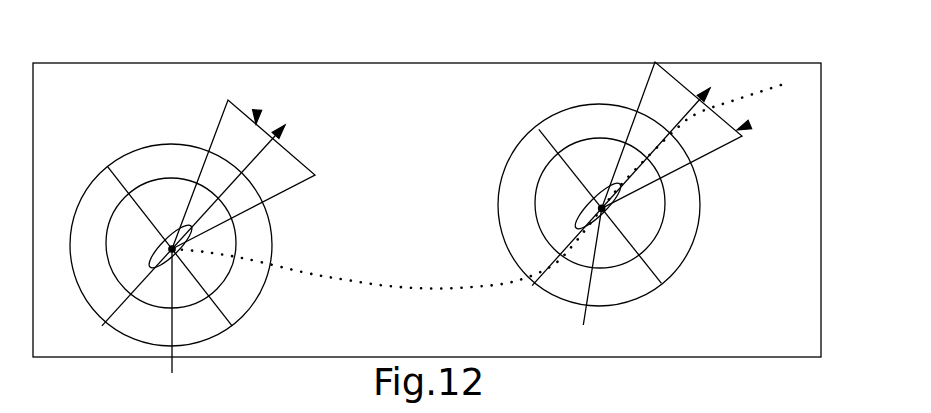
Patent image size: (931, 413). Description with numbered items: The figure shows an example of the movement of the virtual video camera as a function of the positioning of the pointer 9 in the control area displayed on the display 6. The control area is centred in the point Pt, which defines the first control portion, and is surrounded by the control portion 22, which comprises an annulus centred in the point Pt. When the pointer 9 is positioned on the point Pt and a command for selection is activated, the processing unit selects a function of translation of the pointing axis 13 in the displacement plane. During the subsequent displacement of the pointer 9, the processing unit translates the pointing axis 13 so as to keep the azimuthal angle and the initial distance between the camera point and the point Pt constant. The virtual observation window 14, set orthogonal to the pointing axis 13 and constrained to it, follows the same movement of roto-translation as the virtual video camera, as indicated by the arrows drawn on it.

The display 6 is at (393, 109).
The pointer 9 is at (589, 280).
The pointing axis 13 is at (222, 190).
The virtual observation window 14 is at (257, 124).
The control portion 22 is at (230, 273).
The point Pt is at (172, 248).